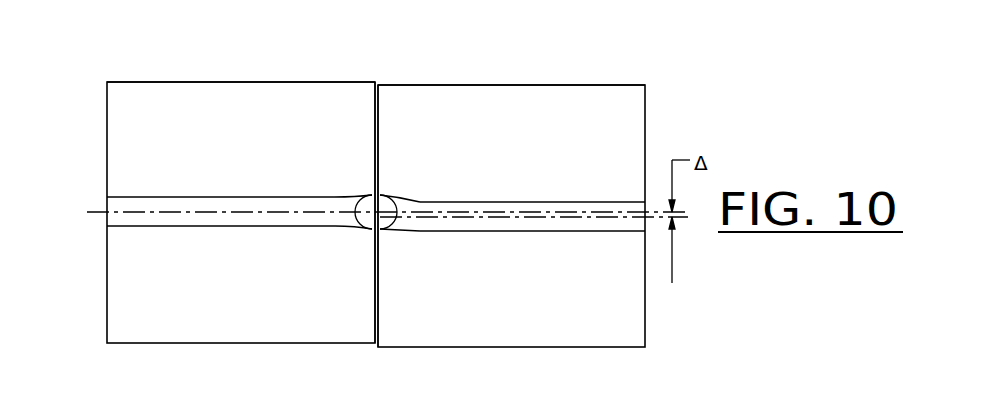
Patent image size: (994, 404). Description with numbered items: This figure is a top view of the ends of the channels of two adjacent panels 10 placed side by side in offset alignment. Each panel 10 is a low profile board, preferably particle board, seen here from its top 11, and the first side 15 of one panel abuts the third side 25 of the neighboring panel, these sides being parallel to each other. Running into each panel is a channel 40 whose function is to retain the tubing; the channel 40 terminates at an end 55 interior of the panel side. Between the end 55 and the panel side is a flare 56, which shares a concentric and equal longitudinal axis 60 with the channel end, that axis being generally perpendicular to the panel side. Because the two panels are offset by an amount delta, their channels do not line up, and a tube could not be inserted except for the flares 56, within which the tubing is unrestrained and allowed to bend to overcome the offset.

The panel 10 is at (152, 81).
The top 11 is at (213, 101).
The first side 15 is at (375, 105).
The third side 25 is at (378, 128).
The channel 40 is at (173, 226).
The end of the channel 55 is at (342, 197).
The flare 56 is at (355, 230).
The longitudinal axis 60 is at (222, 212).